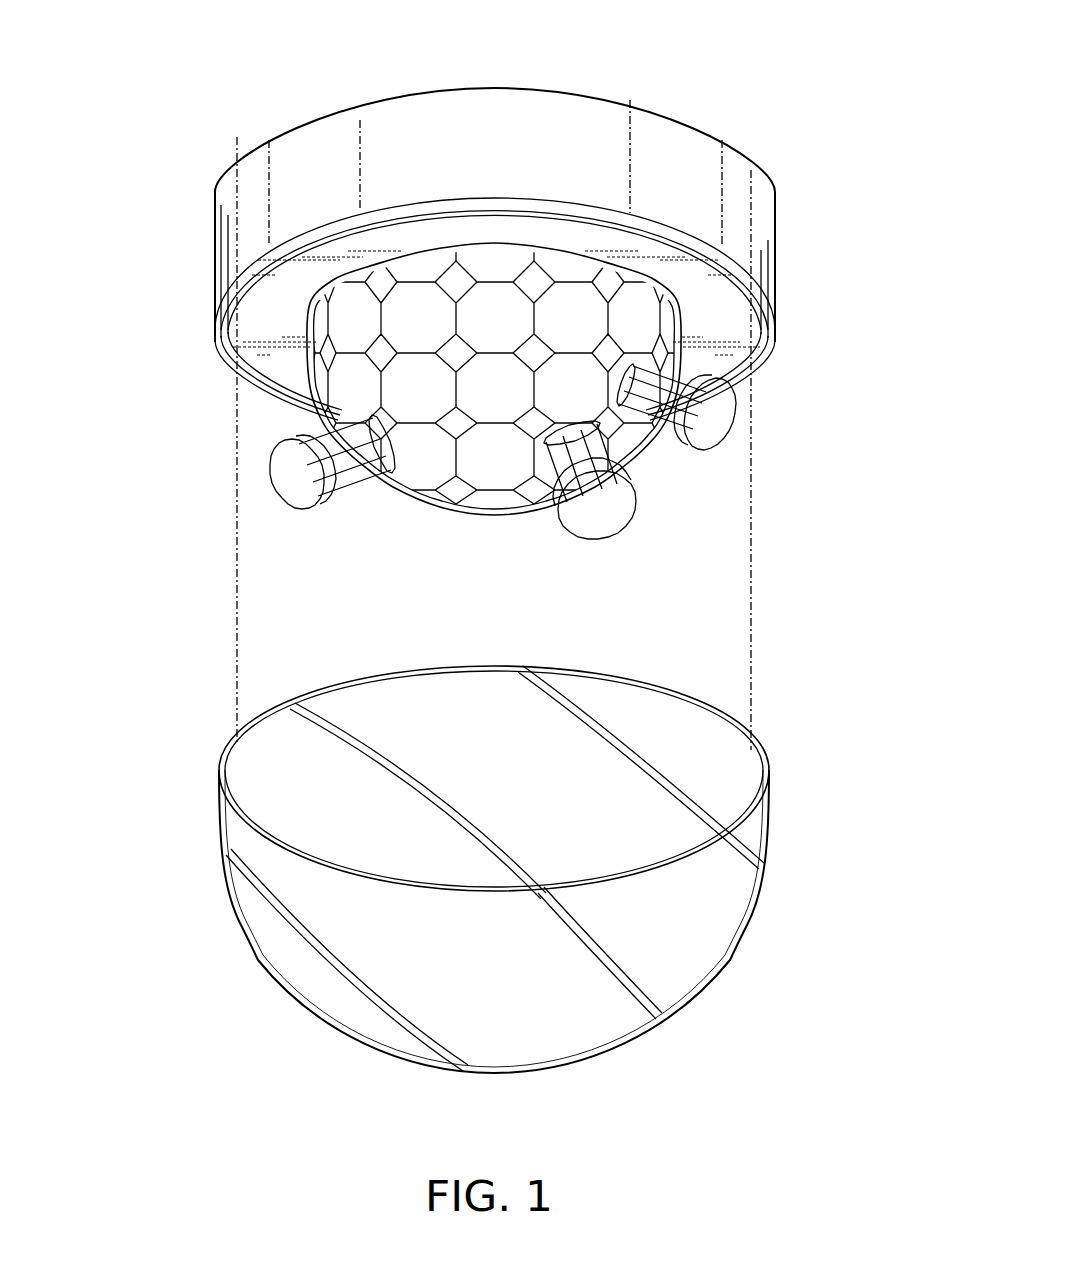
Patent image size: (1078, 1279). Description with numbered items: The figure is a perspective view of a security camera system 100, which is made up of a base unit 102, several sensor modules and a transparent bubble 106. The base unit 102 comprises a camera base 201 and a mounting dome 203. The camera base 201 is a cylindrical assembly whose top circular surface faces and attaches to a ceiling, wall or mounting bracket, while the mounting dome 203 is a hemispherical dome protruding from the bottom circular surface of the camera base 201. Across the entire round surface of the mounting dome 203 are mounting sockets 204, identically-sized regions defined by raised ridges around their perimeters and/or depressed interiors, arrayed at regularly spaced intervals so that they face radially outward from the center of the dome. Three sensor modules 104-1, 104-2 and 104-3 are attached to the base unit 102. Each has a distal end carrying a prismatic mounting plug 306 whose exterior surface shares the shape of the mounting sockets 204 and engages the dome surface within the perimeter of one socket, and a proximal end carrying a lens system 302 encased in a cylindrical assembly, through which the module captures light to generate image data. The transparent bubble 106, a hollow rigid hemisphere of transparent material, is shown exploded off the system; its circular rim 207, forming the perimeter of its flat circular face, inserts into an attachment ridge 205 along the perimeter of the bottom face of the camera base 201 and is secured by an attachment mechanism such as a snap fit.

The security camera system 100 is at (127, 60).
The base unit 102 is at (493, 88).
The camera base 201 is at (775, 250).
The attachment ridge 205 is at (223, 355).
The mounting dome 203 is at (442, 507).
The mounting sockets 204 is at (432, 495).
The mounting plug 306 is at (628, 390).
The lens system 302 is at (718, 418).
The sensor module 104-1 is at (283, 492).
The sensor module 104-2 is at (590, 540).
The sensor module 104-3 is at (715, 452).
The transparent bubble 106 is at (619, 1047).
The circular rim 207 is at (220, 778).